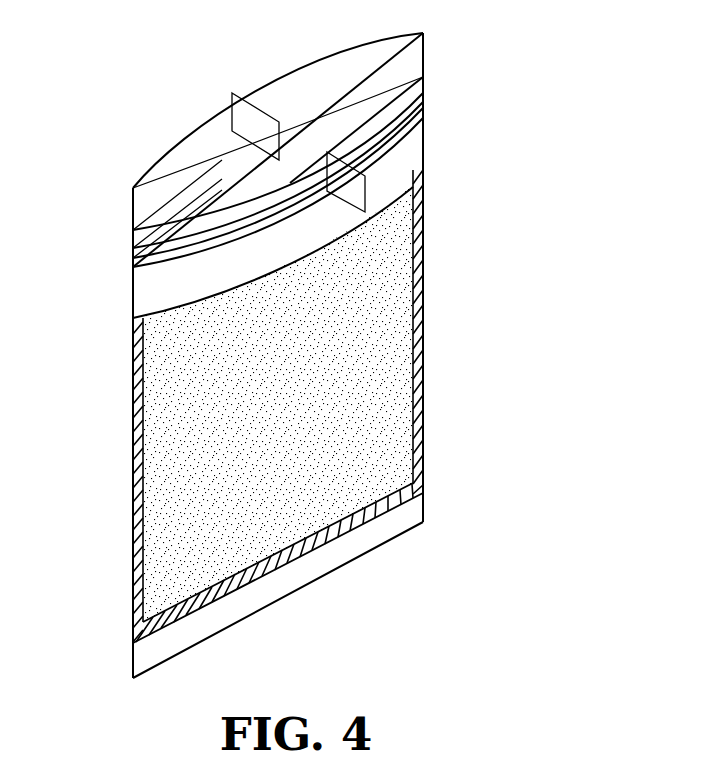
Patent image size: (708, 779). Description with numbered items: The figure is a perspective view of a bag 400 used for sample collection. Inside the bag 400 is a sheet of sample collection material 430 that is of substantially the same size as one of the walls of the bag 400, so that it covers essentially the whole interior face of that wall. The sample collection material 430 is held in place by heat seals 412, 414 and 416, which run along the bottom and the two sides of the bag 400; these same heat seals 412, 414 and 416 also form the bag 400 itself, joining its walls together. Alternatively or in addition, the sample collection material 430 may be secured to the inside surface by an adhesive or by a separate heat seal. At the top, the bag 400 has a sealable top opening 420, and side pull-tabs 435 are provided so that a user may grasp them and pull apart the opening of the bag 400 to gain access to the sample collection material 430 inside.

The bag 400 is at (578, 173).
The heat seal 412 is at (420, 484).
The heat seal 414 is at (425, 260).
The heat seal 416 is at (133, 479).
The sealable top opening 420 is at (423, 99).
The sample collection material 430 is at (332, 318).
The side pull-tabs 435 is at (250, 115).